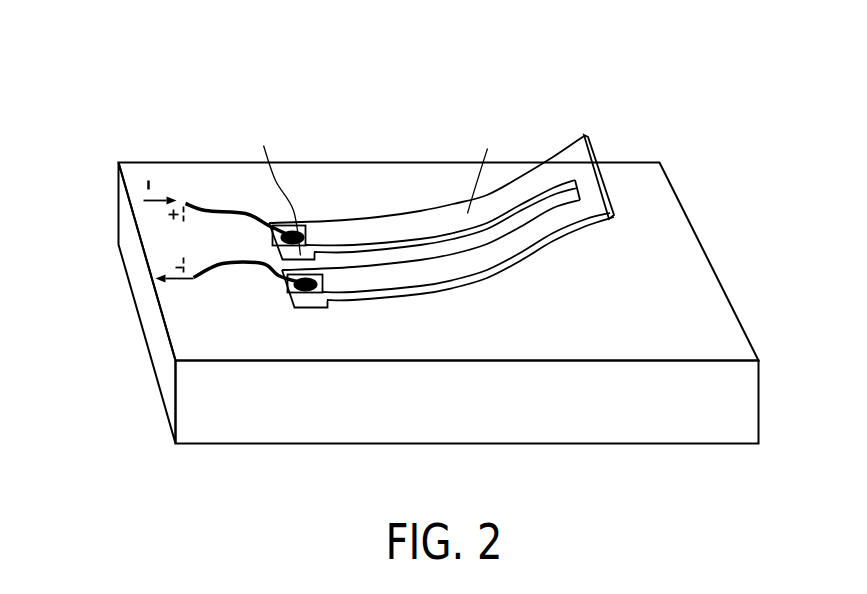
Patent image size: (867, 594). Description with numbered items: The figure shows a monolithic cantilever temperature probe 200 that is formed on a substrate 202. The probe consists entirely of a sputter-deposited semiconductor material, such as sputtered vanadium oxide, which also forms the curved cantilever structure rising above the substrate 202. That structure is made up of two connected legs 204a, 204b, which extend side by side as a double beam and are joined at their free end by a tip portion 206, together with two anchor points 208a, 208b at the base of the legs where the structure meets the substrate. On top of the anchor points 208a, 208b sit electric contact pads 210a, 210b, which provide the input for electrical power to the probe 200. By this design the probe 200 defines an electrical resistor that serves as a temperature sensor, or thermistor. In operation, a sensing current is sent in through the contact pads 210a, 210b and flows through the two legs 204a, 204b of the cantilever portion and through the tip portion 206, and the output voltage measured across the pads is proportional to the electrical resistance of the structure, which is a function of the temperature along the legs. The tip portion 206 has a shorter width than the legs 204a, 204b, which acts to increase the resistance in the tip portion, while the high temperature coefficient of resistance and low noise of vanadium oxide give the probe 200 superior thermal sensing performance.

The cantilever temperature probe 200 is at (185, 96).
The substrate 202 is at (137, 262).
The leg 204a is at (410, 230).
The leg 204b is at (417, 273).
The tip portion 206 is at (587, 178).
The anchor point 208a is at (303, 244).
The anchor point 208b is at (306, 300).
The electric contact pad 210a is at (273, 237).
The electric contact pad 210b is at (288, 282).